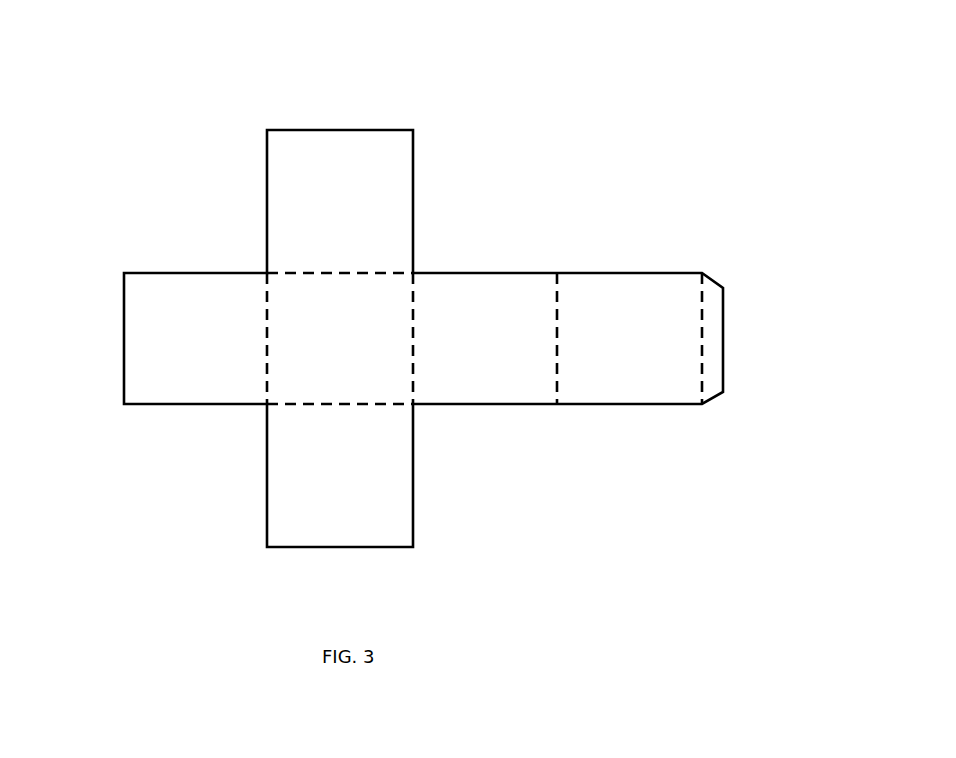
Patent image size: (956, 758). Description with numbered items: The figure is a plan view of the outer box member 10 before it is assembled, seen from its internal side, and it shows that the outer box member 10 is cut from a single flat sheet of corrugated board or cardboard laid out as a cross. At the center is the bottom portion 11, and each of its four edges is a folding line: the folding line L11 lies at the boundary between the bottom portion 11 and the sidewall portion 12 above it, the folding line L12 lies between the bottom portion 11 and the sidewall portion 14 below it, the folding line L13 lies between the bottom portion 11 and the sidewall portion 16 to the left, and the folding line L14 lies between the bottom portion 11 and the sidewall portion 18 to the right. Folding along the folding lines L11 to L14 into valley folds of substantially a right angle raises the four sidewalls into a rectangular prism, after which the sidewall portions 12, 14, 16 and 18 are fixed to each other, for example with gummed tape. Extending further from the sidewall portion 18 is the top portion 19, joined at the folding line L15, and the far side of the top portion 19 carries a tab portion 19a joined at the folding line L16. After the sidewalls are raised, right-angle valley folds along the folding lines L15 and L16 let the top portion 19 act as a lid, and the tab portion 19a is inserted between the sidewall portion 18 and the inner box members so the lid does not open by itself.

The outer box member 10 is at (552, 68).
The bottom portion 11 is at (310, 343).
The sidewall portion 12 is at (339, 162).
The sidewall portion 14 is at (340, 515).
The sidewall portion 16 is at (153, 338).
The sidewall portion 18 is at (495, 378).
The top portion 19 is at (640, 378).
The tab portion 19a is at (710, 337).
The folding line L11 is at (296, 272).
The folding line L12 is at (393, 407).
The folding line L13 is at (266, 377).
The folding line L14 is at (420, 300).
The folding line L15 is at (558, 300).
The folding line L16 is at (702, 300).